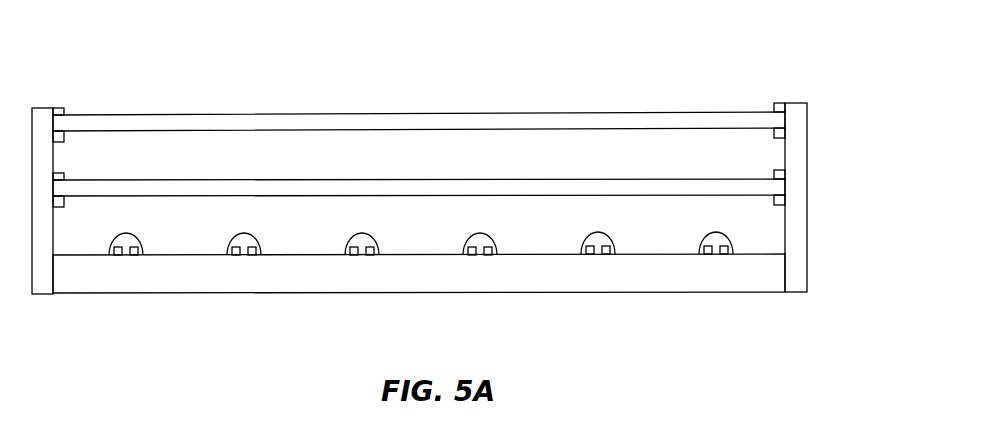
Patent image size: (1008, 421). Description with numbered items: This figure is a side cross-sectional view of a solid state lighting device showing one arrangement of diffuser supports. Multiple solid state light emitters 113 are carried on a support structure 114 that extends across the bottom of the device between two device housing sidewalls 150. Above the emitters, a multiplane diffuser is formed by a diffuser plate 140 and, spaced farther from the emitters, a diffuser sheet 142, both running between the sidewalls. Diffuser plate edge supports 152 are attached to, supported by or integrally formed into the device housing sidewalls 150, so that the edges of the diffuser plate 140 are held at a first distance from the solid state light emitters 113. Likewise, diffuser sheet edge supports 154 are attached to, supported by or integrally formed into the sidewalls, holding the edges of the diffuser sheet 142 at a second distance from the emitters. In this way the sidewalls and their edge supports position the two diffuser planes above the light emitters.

The solid state light emitters 113 is at (493, 240).
The support structure 114 is at (739, 276).
The diffuser plate 140 is at (336, 183).
The diffuser sheet 142 is at (483, 121).
The device housing sidewalls 150 is at (807, 127).
The diffuser plate edge supports 152 is at (65, 173).
The diffuser sheet edge supports 154 is at (65, 108).